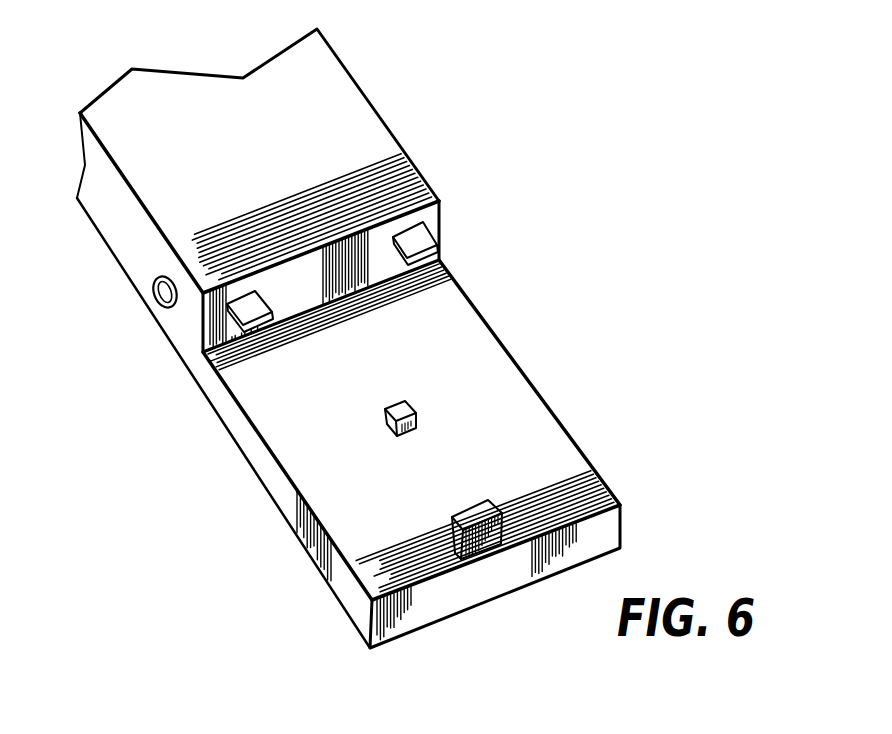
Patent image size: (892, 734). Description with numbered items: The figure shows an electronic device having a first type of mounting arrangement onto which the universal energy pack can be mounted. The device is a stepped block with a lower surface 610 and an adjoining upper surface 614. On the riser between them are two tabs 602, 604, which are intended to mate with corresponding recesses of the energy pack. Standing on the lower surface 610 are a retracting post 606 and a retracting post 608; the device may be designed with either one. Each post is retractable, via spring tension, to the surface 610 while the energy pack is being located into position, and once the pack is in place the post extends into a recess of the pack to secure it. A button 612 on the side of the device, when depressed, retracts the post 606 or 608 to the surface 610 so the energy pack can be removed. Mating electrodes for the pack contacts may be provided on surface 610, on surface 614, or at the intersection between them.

The tab 602 is at (415, 238).
The tab 604 is at (257, 299).
The retracting post 606 is at (397, 408).
The retracting post 608 is at (465, 512).
The surface 610 is at (525, 438).
The button 612 is at (141, 268).
The surface 614 is at (300, 270).